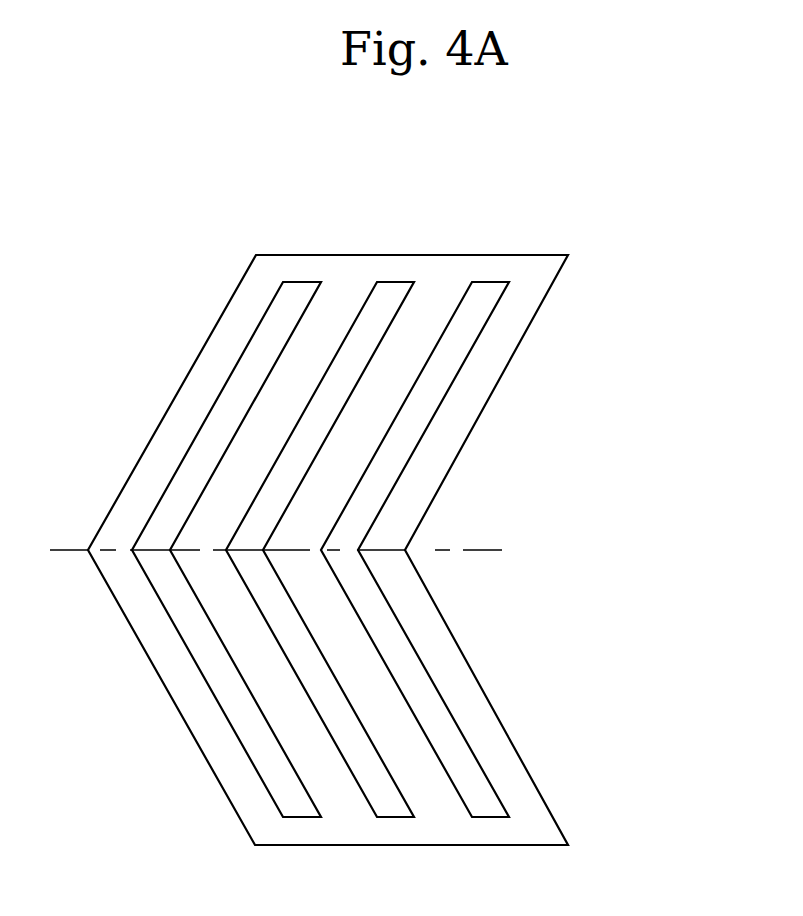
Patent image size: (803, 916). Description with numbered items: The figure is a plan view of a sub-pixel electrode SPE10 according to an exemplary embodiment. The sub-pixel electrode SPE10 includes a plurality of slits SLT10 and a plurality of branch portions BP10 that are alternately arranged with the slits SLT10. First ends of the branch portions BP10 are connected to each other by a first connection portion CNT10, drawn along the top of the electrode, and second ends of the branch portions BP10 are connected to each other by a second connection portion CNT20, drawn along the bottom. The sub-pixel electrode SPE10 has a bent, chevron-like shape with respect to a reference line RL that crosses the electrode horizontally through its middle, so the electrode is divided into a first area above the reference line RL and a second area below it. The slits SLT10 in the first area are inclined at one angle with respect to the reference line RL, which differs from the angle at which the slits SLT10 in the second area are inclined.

The sub-pixel electrode SPE10 is at (531, 245).
The slits SLT10 is at (450, 352).
The branch portions BP10 is at (471, 390).
The first connection portion CNT10 is at (489, 260).
The second connection portion CNT20 is at (489, 820).
The reference line RL is at (291, 551).